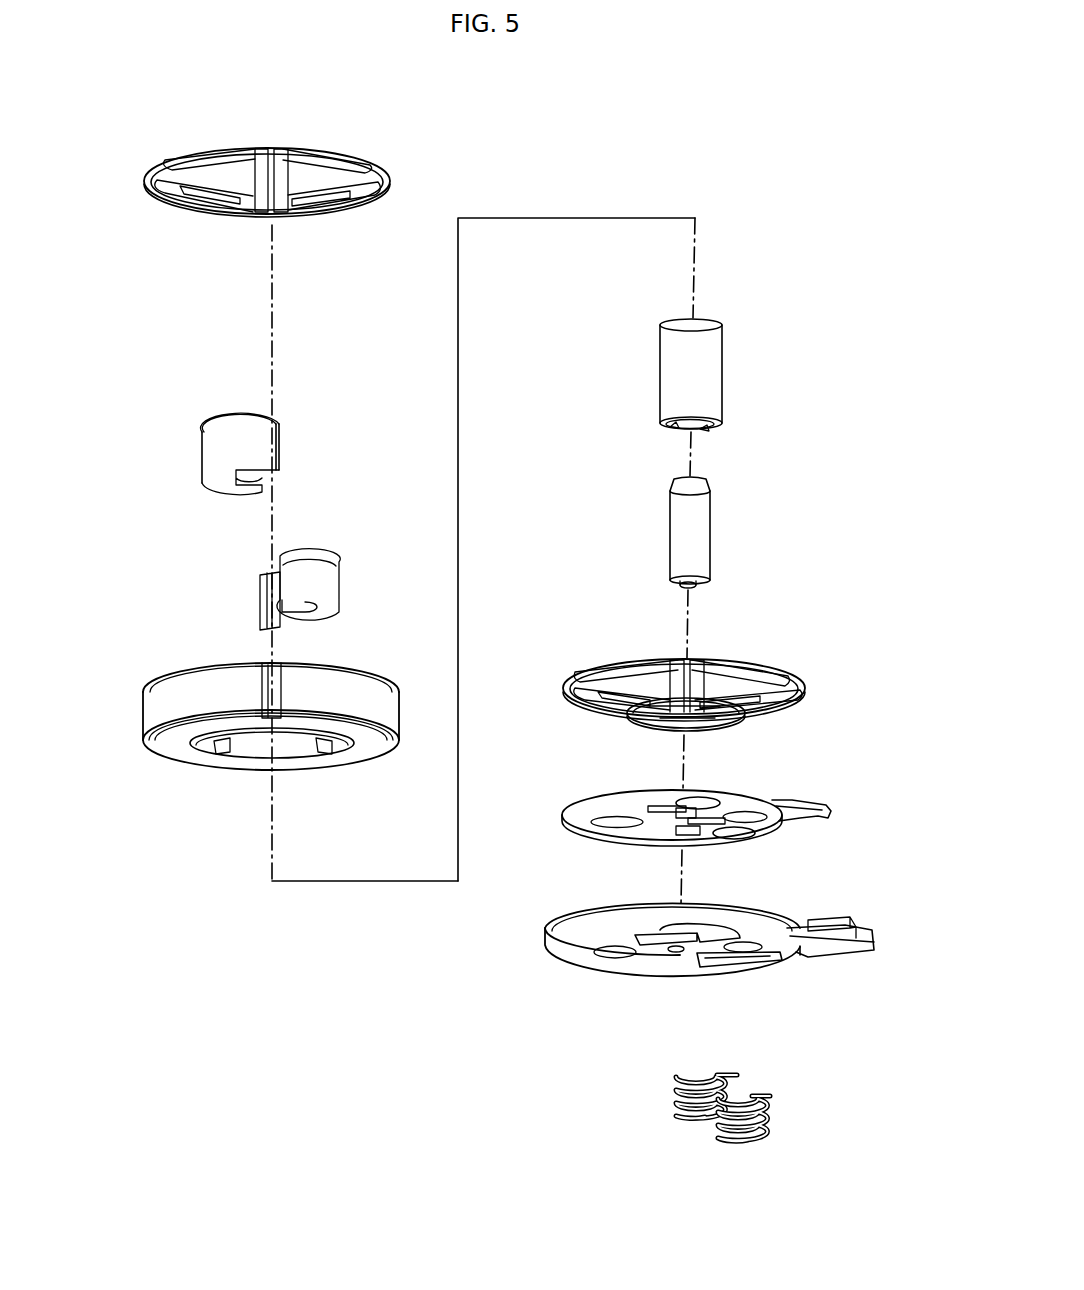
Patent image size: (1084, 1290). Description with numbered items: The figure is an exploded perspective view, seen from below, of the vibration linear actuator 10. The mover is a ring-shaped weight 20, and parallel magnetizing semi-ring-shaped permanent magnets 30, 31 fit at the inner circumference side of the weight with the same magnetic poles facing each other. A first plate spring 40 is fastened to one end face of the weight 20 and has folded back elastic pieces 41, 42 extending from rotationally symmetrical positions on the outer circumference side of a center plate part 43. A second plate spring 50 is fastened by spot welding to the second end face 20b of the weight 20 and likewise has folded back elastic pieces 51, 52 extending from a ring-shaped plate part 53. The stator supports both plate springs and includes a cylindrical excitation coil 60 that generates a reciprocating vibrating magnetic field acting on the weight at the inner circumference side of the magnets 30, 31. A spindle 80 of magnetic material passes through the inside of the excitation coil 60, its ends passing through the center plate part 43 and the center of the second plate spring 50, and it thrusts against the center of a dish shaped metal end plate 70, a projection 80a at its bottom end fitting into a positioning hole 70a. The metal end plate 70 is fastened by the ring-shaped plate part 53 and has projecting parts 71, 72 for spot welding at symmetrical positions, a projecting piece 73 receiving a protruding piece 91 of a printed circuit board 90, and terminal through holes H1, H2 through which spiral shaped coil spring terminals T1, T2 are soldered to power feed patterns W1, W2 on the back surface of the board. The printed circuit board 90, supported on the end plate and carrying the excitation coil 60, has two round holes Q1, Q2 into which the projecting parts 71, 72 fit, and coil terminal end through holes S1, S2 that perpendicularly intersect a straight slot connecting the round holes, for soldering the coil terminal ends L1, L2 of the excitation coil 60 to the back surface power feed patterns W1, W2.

The vibration linear actuator 10 is at (166, 74).
The ring-shaped weight 20 is at (224, 753).
The second end face of the weight 20b is at (181, 752).
The semi-ring-shaped permanent magnet 30 is at (201, 457).
The semi-ring-shaped permanent magnet 31 is at (342, 588).
The first plate spring 40 is at (293, 183).
The folded back elastic piece 41 is at (176, 205).
The folded back elastic piece 42 is at (386, 199).
The center plate part 43 is at (253, 178).
The second plate spring 50 is at (701, 680).
The folded back elastic piece 51 is at (564, 692).
The folded back elastic piece 52 is at (804, 697).
The ring-shaped plate part 53 is at (734, 721).
The excitation coil 60 is at (697, 396).
The coil terminal end L1 is at (675, 427).
The coil terminal end L2 is at (690, 432).
The metal end plate 70 is at (696, 957).
The positioning hole 70a is at (677, 953).
The projecting part 71 is at (612, 957).
The projecting part 72 is at (755, 962).
The projecting piece 73 is at (855, 946).
The spindle 80 is at (741, 552).
The projection 80a is at (690, 590).
The printed circuit board 90 is at (710, 817).
The protruding piece 91 is at (828, 808).
The round hole Q1 is at (609, 827).
The round hole Q2 is at (768, 823).
The power feed pattern W1 is at (737, 762).
The power feed pattern W2 is at (772, 868).
The coil terminal end through hole S1 is at (688, 808).
The coil terminal end through hole S2 is at (694, 861).
The terminal through hole H1 is at (690, 932).
The terminal through hole H2 is at (744, 952).
The coil spring terminal T1 is at (675, 1074).
The coil spring terminal T2 is at (752, 1128).